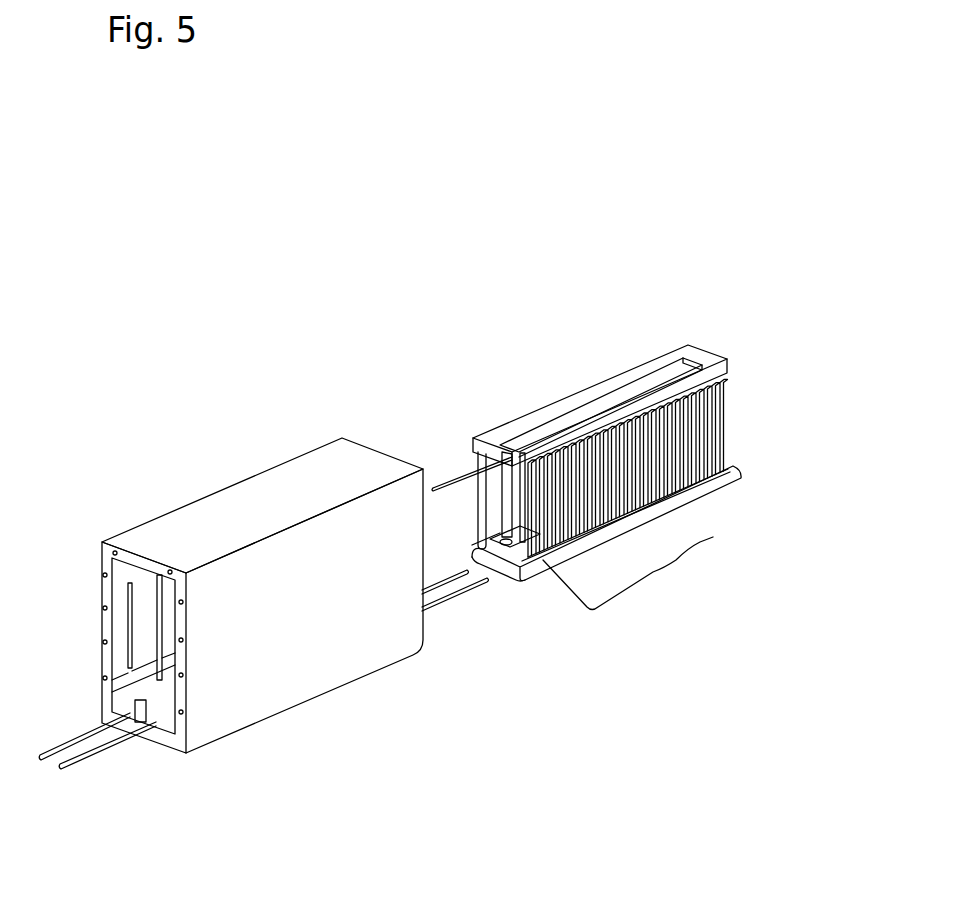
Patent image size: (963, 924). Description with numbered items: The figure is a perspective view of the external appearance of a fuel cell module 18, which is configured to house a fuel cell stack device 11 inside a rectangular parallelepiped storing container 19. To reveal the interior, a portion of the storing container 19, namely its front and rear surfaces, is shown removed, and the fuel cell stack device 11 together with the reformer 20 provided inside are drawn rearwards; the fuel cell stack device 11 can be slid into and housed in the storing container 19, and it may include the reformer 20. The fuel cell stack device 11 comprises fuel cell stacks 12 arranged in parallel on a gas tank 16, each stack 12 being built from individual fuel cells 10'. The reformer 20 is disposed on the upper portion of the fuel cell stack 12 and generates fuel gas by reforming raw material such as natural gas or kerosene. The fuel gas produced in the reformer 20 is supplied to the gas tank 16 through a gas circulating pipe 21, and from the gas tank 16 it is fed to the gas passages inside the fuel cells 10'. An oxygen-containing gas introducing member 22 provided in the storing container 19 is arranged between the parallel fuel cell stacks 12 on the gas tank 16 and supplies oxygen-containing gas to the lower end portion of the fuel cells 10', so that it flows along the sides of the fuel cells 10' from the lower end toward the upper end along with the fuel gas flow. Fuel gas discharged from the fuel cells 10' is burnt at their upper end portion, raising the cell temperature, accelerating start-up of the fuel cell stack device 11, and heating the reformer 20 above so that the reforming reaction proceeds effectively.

The fuel cell module 18 is at (172, 159).
The storing container 19 is at (265, 488).
The oxygen-containing gas introducing member 22 is at (168, 612).
The fuel cell 10' is at (562, 426).
The reformer 20 is at (487, 443).
The gas circulating pipe 21 is at (482, 465).
The fuel cell stack device 11 is at (635, 336).
The fuel cell stack 12 is at (733, 467).
The gas tank 16 is at (532, 570).